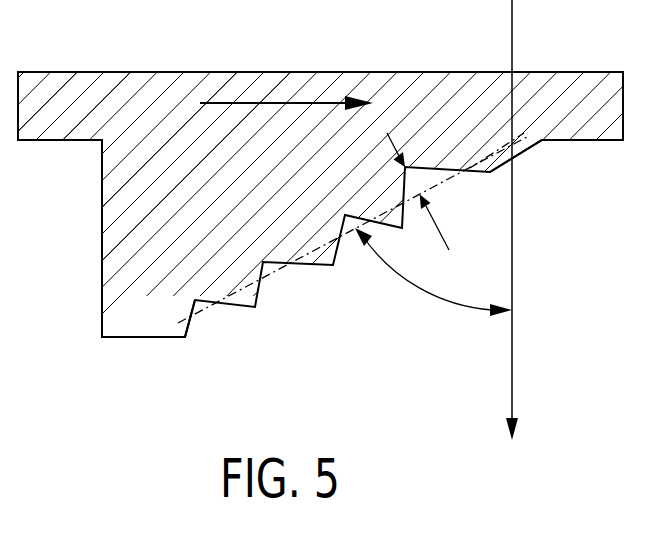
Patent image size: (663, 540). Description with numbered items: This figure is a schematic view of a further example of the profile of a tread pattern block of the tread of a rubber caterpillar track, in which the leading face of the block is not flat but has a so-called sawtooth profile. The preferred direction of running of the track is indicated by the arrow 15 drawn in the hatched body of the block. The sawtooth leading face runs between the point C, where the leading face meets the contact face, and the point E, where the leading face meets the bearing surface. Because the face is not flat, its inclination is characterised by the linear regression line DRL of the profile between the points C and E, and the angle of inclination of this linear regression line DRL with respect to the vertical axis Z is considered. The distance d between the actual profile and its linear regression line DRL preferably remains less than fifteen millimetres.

The arrow 15 is at (275, 103).
The point E is at (541, 142).
The point C is at (185, 336).
The linear regression line DRL is at (276, 272).
The distance d is at (424, 191).
The Z axis direction Z is at (525, 224).